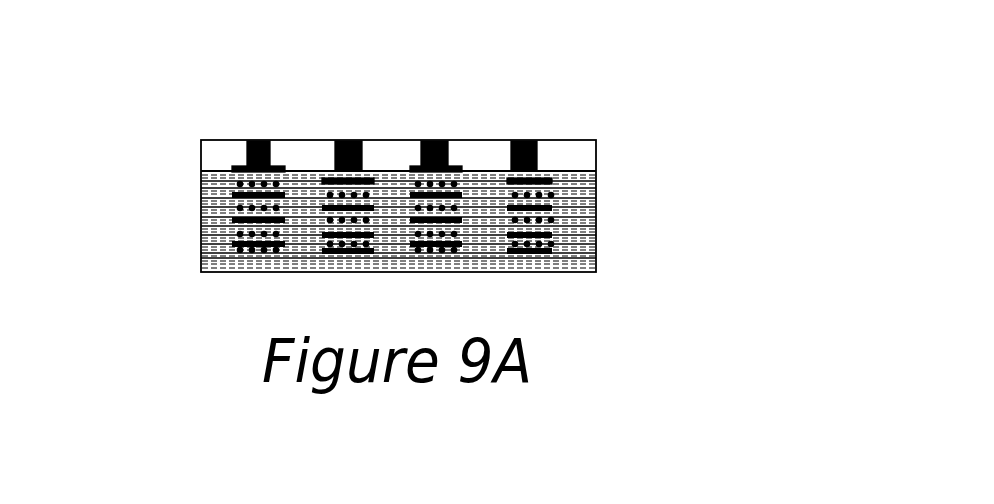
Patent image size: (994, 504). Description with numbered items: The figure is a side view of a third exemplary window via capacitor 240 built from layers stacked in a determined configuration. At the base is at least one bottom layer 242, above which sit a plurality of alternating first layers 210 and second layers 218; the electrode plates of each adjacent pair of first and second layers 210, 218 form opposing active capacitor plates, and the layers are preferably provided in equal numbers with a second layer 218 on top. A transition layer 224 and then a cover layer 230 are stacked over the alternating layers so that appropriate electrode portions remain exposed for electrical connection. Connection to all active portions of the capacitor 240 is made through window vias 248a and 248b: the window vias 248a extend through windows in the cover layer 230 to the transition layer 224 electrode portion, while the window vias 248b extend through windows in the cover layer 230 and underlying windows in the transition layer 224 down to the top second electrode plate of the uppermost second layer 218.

The third exemplary embodiment 240 is at (733, 106).
The cover layer 230 is at (584, 149).
The window vias 248a is at (262, 140).
The window vias 248b is at (350, 140).
The transition layer 224 is at (589, 178).
The second layers 218 is at (582, 218).
The bottom layer 242 is at (585, 244).
The first layers 210 is at (406, 207).